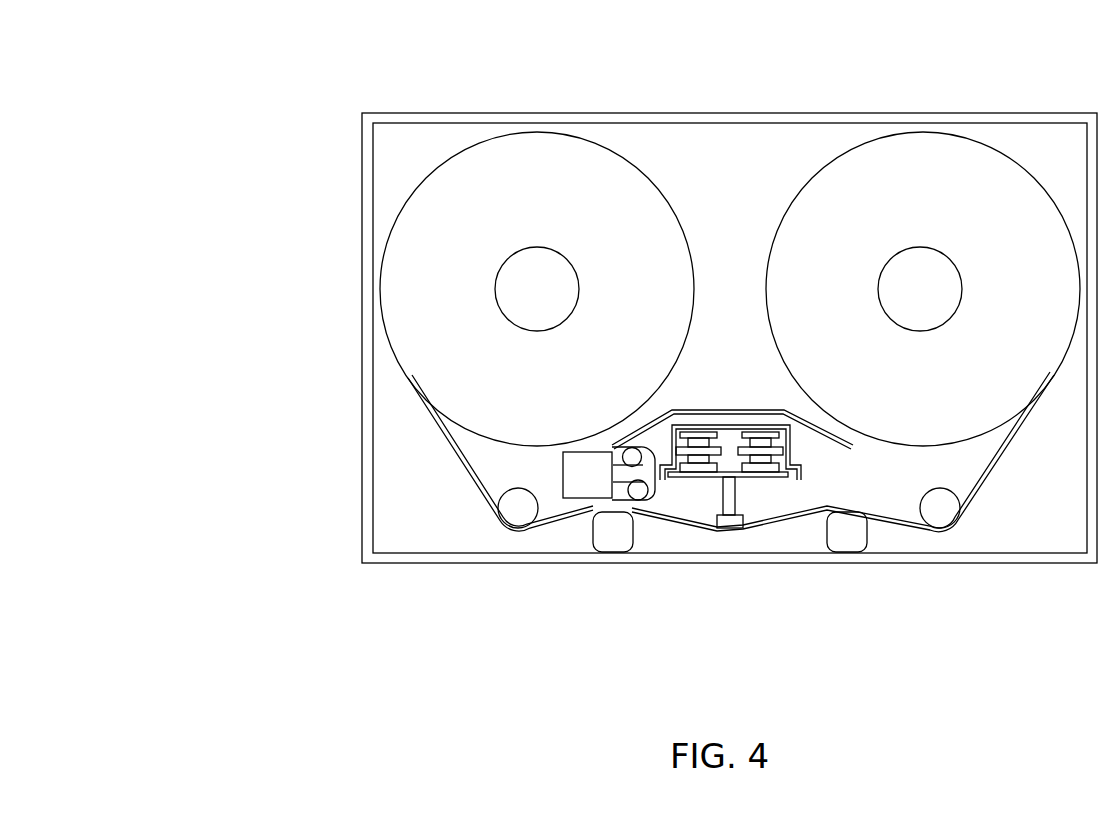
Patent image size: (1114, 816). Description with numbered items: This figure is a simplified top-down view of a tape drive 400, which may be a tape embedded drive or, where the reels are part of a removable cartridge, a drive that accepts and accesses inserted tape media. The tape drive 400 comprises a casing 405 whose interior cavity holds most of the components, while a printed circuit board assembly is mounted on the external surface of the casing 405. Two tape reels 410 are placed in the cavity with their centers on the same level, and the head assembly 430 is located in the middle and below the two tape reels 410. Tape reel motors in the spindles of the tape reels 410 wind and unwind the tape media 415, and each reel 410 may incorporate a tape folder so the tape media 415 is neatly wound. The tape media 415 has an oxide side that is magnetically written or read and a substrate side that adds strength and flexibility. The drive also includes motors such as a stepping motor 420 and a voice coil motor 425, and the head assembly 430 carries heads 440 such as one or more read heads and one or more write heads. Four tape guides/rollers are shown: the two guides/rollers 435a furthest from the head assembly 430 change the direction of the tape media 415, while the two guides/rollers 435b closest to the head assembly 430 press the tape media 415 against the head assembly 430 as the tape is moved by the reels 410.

The tape drive 400 is at (272, 73).
The casing 405 is at (760, 113).
The tape reels 410 is at (520, 133).
The tape media 415 is at (463, 470).
The stepping motor 420 is at (572, 497).
The voice coil motor 425 is at (703, 480).
The head assembly 430 is at (729, 528).
The tape guides/rollers 435a is at (517, 510).
The tape guides/rollers 435b is at (615, 537).
The heads 440 is at (577, 270).